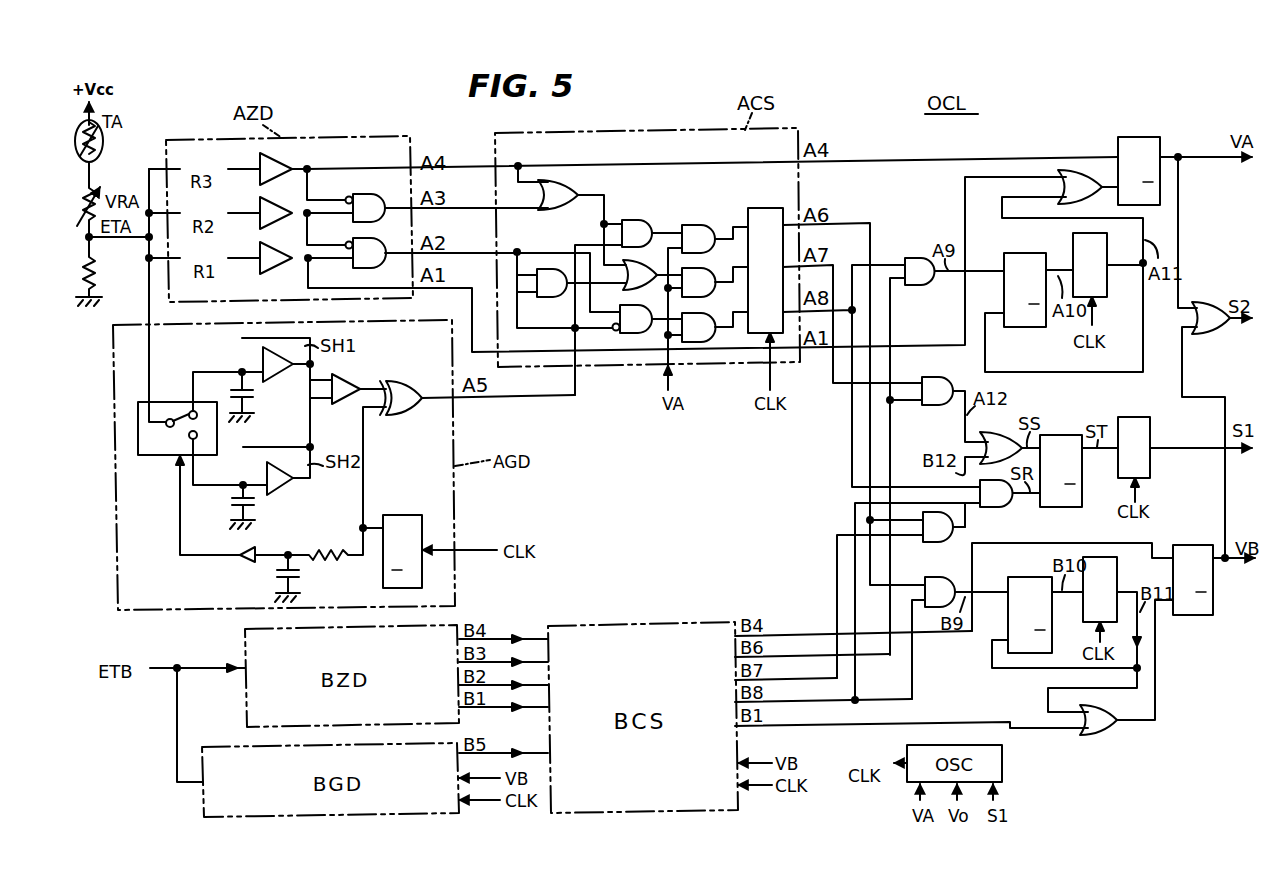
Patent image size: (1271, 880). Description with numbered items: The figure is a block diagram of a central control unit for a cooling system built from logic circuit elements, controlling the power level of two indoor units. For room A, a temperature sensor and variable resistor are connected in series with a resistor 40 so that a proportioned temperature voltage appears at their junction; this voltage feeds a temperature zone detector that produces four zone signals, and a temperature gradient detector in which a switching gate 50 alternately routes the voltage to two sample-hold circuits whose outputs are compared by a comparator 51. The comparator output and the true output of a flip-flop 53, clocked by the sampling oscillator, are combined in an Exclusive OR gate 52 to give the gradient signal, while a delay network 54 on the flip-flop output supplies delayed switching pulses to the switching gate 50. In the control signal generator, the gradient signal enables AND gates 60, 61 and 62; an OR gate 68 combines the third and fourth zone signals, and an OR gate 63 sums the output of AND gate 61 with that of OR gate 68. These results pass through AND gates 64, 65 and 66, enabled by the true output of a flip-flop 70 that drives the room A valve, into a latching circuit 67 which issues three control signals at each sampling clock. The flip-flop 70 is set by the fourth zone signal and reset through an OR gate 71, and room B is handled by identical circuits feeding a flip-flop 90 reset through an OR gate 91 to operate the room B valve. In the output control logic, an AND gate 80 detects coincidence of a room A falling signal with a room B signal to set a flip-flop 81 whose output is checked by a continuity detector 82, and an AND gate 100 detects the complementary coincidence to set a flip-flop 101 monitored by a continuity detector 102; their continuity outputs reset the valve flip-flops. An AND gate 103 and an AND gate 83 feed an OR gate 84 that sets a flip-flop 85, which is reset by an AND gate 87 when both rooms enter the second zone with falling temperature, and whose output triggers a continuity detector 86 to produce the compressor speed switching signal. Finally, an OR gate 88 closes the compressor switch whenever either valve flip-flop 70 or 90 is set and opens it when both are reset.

The resistor 40 is at (97, 283).
The switching gate 50 is at (155, 457).
The comparator 51 is at (345, 378).
The Exclusive OR gate 52 is at (410, 388).
The flip-flop 53 is at (398, 515).
The delay network 54 is at (300, 543).
The AND gate 60 is at (636, 220).
The AND gate 61 is at (550, 297).
The AND gate 62 is at (637, 333).
The OR gate 63 is at (622, 270).
The AND gate 64 is at (703, 342).
The AND gate 65 is at (705, 266).
The AND gate 66 is at (690, 225).
The latching circuit 67 is at (766, 208).
The OR gate 68 is at (567, 185).
The flip-flop 70 is at (1143, 137).
The OR gate 71 is at (1077, 170).
The AND gate 80 is at (912, 258).
The flip-flop 81 is at (1004, 260).
The continuity detector 82 is at (1073, 240).
The AND gate 83 is at (945, 370).
The OR gate 84 is at (998, 430).
The flip-flop 85 is at (1052, 435).
The continuity detector 86 is at (1150, 441).
The AND gate 87 is at (998, 507).
The OR gate 88 is at (1203, 304).
The flip-flop 90 is at (1190, 545).
The OR gate 91 is at (1100, 735).
The AND gate 100 is at (926, 580).
The flip-flop 101 is at (1008, 582).
The continuity detector 102 is at (1117, 571).
The AND gate 103 is at (950, 542).